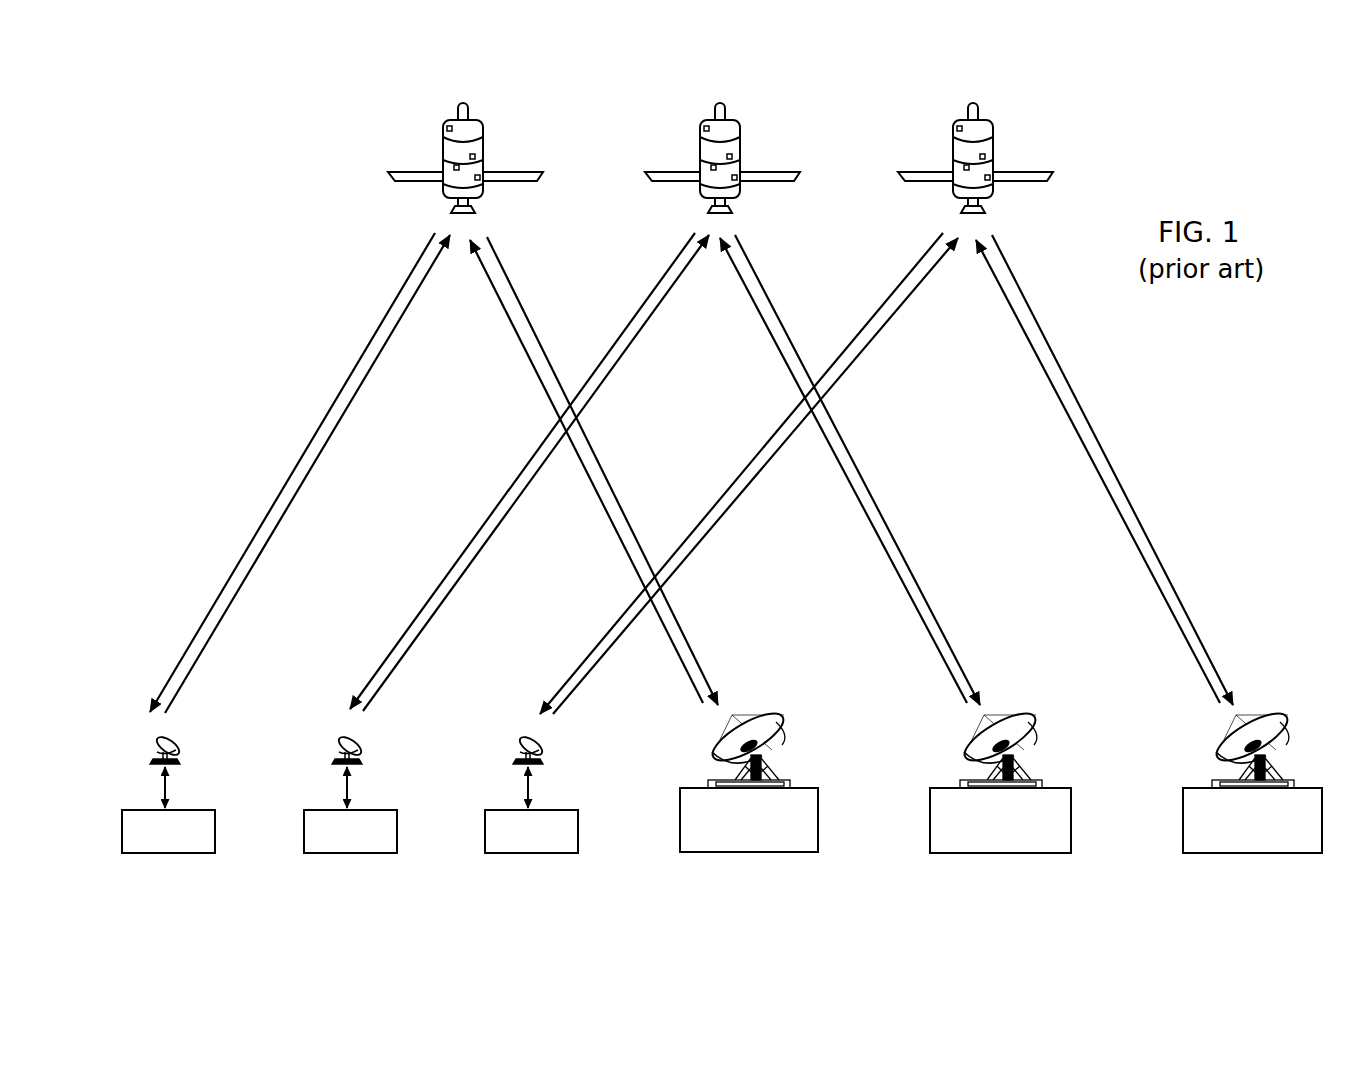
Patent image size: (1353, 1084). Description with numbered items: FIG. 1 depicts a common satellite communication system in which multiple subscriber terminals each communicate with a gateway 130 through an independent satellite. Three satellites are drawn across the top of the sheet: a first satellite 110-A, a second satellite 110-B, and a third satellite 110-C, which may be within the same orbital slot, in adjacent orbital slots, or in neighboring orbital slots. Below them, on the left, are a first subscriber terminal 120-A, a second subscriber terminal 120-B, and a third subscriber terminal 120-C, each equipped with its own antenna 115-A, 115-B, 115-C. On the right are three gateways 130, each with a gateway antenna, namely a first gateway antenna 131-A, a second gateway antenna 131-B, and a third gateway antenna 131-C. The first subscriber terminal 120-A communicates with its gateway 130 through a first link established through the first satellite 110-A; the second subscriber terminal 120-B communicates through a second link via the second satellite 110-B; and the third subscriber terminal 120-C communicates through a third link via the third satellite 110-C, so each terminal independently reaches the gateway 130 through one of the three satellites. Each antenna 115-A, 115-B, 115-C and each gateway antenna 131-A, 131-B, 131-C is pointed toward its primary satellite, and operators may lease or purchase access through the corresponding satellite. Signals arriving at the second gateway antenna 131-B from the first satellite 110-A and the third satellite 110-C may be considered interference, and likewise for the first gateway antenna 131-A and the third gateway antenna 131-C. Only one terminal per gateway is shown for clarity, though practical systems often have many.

The first satellite 110-A is at (453, 157).
The second satellite 110-B is at (710, 157).
The third satellite 110-C is at (963, 157).
The antenna 115-A is at (157, 741).
The antenna 115-B is at (339, 741).
The antenna 115-C is at (520, 741).
The first subscriber terminal 120-A is at (163, 853).
The second subscriber terminal 120-B is at (345, 853).
The third subscriber terminal 120-C is at (510, 853).
The first gateway antenna 131-A is at (721, 757).
The second gateway antenna 131-B is at (973, 757).
The third gateway antenna 131-C is at (1226, 757).
The gateway 130 is at (712, 847).